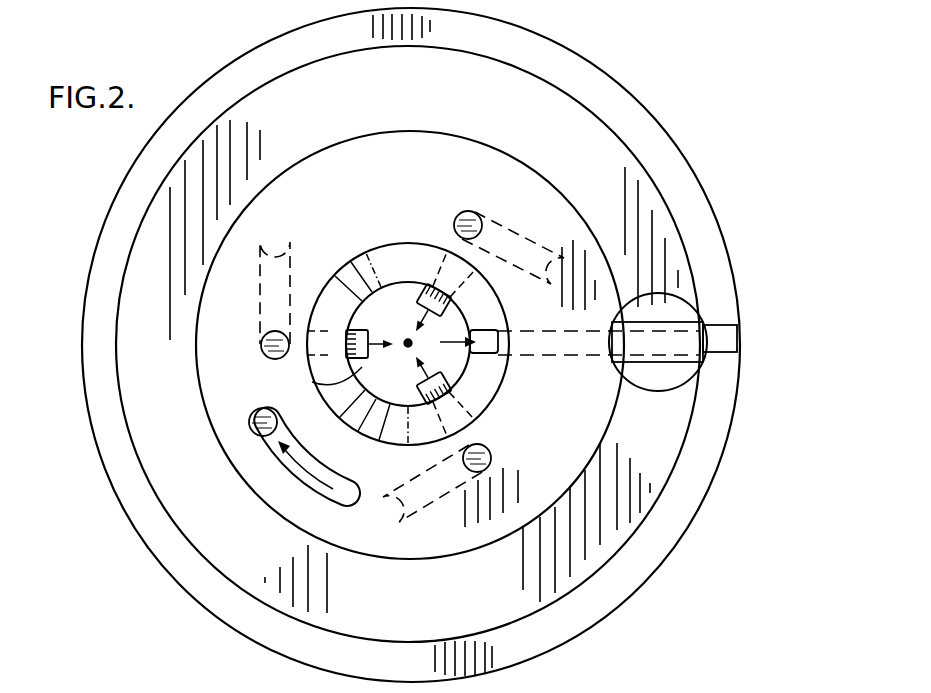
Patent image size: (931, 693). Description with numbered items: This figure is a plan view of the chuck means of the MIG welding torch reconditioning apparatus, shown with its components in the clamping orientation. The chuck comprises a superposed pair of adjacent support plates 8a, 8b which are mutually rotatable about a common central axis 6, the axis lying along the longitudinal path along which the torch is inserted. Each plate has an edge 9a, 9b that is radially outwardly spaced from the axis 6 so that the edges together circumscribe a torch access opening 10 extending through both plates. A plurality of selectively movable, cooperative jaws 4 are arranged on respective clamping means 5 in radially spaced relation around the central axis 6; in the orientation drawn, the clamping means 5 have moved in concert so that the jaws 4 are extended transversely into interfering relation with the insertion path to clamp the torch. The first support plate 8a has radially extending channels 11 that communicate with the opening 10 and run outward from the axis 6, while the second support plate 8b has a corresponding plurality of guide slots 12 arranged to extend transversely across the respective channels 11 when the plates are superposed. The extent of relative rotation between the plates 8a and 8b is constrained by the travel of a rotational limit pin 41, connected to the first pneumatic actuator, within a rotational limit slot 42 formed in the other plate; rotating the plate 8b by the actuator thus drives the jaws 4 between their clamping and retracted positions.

The jaws 4 is at (389, 306).
The clamping means 5 is at (262, 348).
The central axis 6 is at (406, 349).
The support plate 8a is at (418, 245).
The support plate 8b is at (598, 405).
The edge 9a is at (390, 248).
The edge 9b is at (500, 378).
The torch access opening 10 is at (312, 382).
The radially extending channels 11 is at (332, 330).
The guide slots 12 is at (262, 285).
The rotational limit pin 41 is at (249, 423).
The rotational limit slot 42 is at (322, 494).